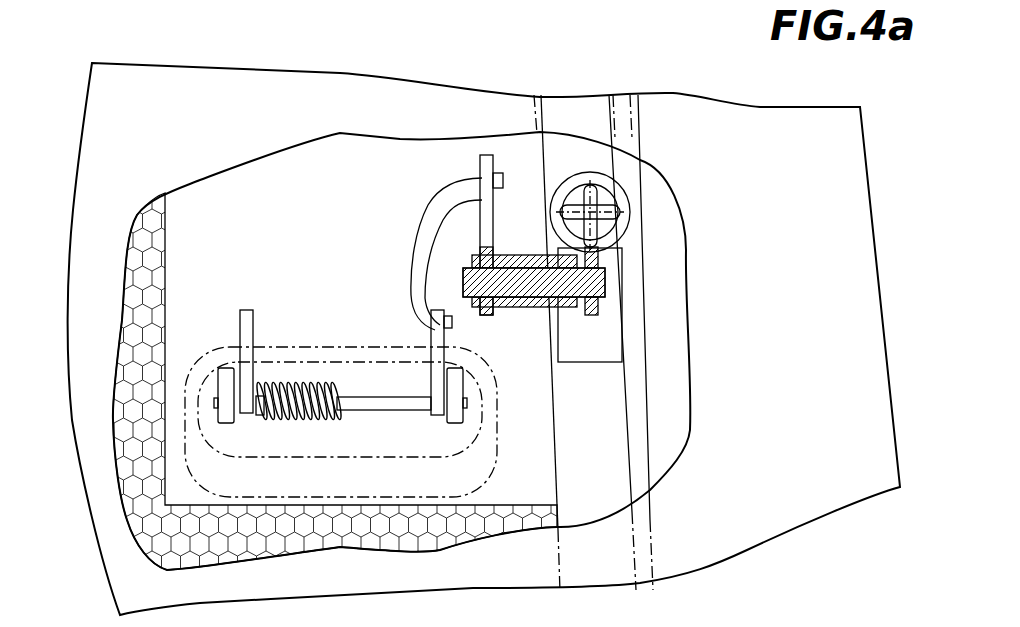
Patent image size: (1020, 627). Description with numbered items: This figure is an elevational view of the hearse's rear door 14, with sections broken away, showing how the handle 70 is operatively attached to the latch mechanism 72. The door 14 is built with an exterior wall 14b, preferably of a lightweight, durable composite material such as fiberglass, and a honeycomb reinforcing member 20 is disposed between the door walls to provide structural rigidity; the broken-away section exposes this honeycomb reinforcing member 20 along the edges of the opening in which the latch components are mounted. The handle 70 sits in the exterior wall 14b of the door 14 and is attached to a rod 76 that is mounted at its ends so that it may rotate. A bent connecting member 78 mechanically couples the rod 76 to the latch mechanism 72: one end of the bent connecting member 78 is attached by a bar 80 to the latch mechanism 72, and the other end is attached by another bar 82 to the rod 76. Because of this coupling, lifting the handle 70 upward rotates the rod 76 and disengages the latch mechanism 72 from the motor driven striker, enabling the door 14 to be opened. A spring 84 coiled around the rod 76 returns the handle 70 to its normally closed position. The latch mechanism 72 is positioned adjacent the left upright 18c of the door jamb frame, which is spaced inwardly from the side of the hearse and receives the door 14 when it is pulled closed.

The door 14 is at (760, 505).
The exterior wall 14b is at (277, 97).
The left upright 18c is at (637, 452).
The honeycomb reinforcing member 20 is at (287, 537).
The handle 70 is at (200, 453).
The latch mechanism 72 is at (598, 283).
The rod 76 is at (367, 403).
The bent connecting member 78 is at (402, 211).
The bar 80 is at (493, 210).
The bar 82 is at (437, 337).
The spring 84 is at (283, 403).